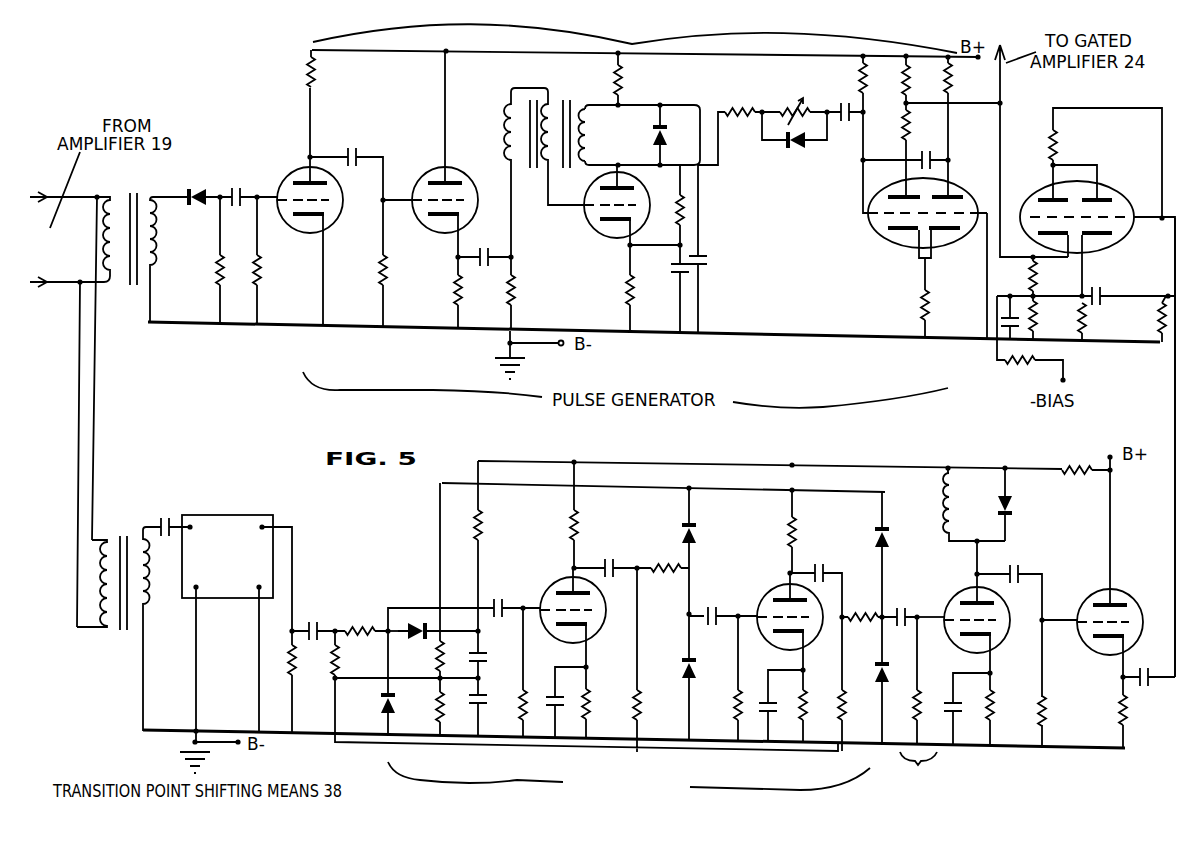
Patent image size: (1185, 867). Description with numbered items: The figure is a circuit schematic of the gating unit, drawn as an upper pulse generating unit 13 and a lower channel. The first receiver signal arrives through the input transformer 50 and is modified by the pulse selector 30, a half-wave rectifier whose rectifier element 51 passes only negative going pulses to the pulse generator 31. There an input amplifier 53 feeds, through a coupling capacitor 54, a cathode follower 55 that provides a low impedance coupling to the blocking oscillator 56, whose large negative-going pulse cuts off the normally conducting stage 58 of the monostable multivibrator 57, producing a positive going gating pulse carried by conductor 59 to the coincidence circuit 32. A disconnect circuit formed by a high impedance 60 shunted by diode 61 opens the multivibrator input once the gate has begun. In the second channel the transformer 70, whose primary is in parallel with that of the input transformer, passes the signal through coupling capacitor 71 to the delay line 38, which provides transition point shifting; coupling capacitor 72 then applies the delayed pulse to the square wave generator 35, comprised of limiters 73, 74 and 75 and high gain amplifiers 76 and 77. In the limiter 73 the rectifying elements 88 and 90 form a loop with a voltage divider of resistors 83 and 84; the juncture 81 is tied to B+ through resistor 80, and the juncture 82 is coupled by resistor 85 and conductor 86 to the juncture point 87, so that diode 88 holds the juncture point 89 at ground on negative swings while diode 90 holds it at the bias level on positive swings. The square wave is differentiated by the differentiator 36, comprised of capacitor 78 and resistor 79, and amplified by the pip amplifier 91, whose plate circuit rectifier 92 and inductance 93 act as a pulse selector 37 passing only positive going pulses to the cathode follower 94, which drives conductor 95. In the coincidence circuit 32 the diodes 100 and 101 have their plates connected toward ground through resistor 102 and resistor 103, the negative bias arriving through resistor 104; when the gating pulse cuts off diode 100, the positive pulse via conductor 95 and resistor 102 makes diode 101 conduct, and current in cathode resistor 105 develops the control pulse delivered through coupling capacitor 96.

The pulse generator 13 is at (224, 84).
The pulse generator 31 is at (645, 40).
The pulse selector 30 is at (235, 400).
The input transformer 50 is at (140, 180).
The rectifier element 51 is at (196, 186).
The input amplifier 53 is at (297, 171).
The coupling capacitor 54 is at (355, 152).
The cathode follower 55 is at (450, 170).
The blocking oscillator 56 is at (587, 245).
The monostable multivibrator 57 is at (873, 253).
The normally conducting stage 58 is at (910, 248).
The conductor 59 is at (988, 101).
The variable resistor 60 is at (794, 106).
The diode 61 is at (791, 149).
The coincidence circuit 32 is at (1118, 155).
The diode 100 is at (1046, 188).
The diode 101 is at (1111, 189).
The resistor 102 is at (1051, 137).
The resistor 103 is at (1158, 310).
The bias resistor 104 is at (1011, 368).
The cathode resistor 105 is at (1077, 311).
The coupling capacitor 96 is at (1099, 287).
The conductor 95 is at (1173, 421).
The transformer 70 is at (125, 530).
The coupling capacitor 71 is at (163, 517).
The delay line 38 is at (238, 500).
The coupling capacitor 72 is at (315, 622).
The juncture point 87 is at (337, 624).
The juncture point 89 is at (387, 626).
The rectifying element 90 is at (413, 621).
The resistor 85 is at (340, 656).
The conductor 86 is at (362, 677).
The rectifying element 88 is at (377, 706).
The limiter 73 is at (422, 665).
The juncture 82 is at (438, 679).
The resistor 83 is at (442, 656).
The resistor 84 is at (443, 707).
The juncture 81 is at (481, 633).
The resistor 80 is at (484, 523).
The high gain amplifier 76 is at (622, 661).
The limiter 74 is at (723, 570).
The high gain amplifier 77 is at (834, 668).
The limiter 75 is at (872, 653).
The capacitor 78 is at (901, 609).
The resistor 79 is at (921, 702).
The pip amplifier 91 is at (1032, 653).
The inductance 93 is at (937, 504).
The rectifier 92 is at (1012, 509).
The differentiator 36 is at (935, 560).
The cathode follower 94 is at (1092, 591).
The square wave generator 35 is at (629, 778).
The pulse selector 37 is at (1060, 767).